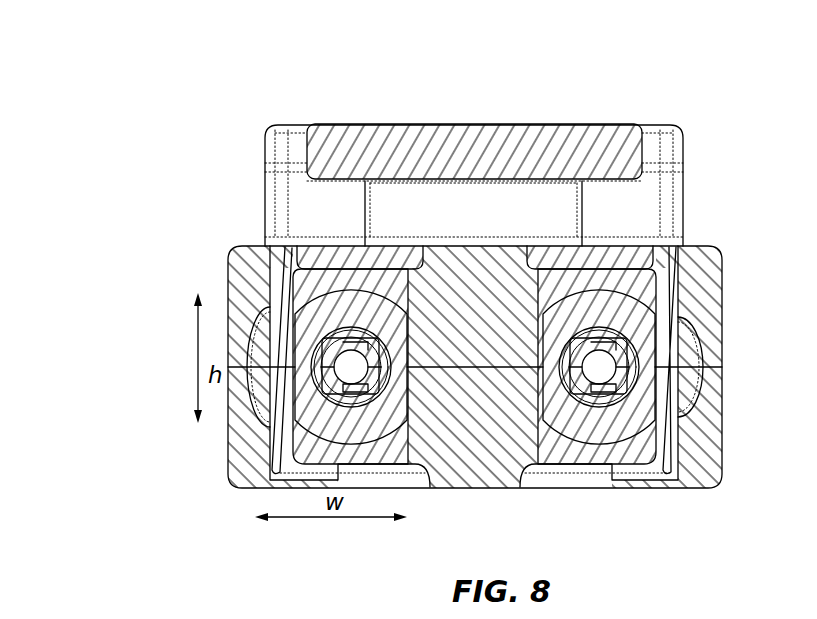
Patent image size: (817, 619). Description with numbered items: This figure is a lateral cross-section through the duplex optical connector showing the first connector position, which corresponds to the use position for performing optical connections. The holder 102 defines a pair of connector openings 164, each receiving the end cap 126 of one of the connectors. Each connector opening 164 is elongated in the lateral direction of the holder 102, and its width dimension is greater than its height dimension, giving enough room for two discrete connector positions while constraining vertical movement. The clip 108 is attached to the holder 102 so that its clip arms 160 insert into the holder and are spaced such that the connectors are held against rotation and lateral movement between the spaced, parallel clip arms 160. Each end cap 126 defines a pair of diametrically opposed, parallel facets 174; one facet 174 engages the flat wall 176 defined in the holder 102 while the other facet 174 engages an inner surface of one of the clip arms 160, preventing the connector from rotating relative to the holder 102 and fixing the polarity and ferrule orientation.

The holder 102 is at (247, 244).
The clip 108 is at (336, 123).
The end cap 126 is at (353, 292).
The clip arm 160 is at (275, 313).
The connector opening 164 is at (693, 380).
The facet 174 is at (542, 340).
The flat wall 176 is at (415, 403).